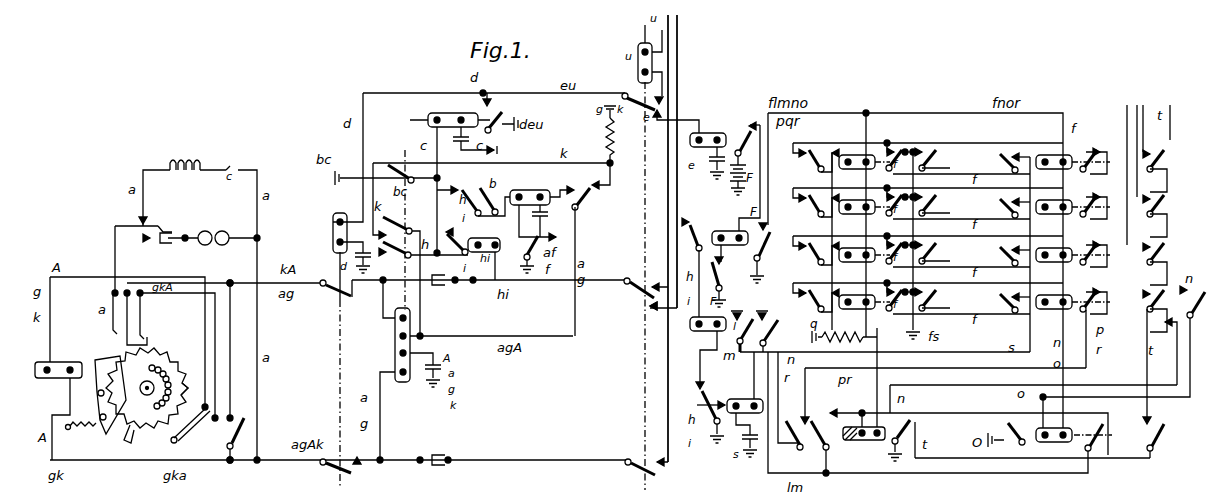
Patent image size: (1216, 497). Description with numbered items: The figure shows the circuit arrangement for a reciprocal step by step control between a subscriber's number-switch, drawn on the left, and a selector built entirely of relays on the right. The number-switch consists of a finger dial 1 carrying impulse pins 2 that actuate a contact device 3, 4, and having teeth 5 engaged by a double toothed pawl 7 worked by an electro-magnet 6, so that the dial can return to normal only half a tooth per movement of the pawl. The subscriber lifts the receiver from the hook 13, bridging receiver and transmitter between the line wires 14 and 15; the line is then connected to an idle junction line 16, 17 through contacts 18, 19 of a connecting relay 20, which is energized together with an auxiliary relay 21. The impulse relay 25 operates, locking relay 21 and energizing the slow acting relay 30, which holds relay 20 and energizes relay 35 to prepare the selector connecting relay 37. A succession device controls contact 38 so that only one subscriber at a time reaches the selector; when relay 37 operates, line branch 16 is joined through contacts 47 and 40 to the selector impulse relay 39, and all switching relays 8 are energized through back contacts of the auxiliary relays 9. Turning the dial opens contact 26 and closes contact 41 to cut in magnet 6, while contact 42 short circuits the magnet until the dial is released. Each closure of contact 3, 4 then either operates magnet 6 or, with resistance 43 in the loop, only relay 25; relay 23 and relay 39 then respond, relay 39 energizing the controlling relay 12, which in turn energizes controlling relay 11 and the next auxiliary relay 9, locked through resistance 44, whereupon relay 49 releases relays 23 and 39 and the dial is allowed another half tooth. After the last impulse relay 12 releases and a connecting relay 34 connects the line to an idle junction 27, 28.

The finger dial 1 is at (147, 388).
The impulse pins 2 is at (173, 365).
The contact spring 3 is at (172, 437).
The contact 4 is at (198, 434).
The teeth 5 is at (125, 435).
The electro-magnet 6 is at (62, 362).
The double toothed pawl 7 is at (96, 385).
The switching relays 8 is at (1054, 239).
The auxiliary relays 9 is at (857, 239).
The controlling relay 11 is at (1062, 443).
The controlling relay 12 is at (870, 441).
The hook 13 is at (170, 226).
The line wire 14 is at (236, 283).
The line wire 15 is at (238, 463).
The junction line branch 16 is at (627, 291).
The junction line branch 17 is at (615, 466).
The contact 18 is at (342, 305).
The contact 19 is at (360, 470).
The connecting relay 20 is at (333, 232).
The auxiliary relay 21 is at (532, 190).
The relay 23 is at (488, 238).
The impulse relay 25 is at (395, 346).
The contact 26 is at (113, 332).
The junction conductor 27 is at (677, 37).
The junction conductor 28 is at (677, 60).
The slow acting relay 30 is at (450, 113).
The connecting relay 34 is at (638, 70).
The relay 35 is at (712, 133).
The selector connecting relay 37 is at (737, 231).
The contact 38 is at (724, 265).
The impulse relay 39 is at (702, 332).
The contact 40 is at (700, 220).
The contact 41 is at (145, 337).
The contact 42 is at (245, 416).
The resistance 43 is at (602, 140).
The resistance 44 is at (844, 343).
The contact 47 is at (647, 301).
The relay 49 is at (750, 399).